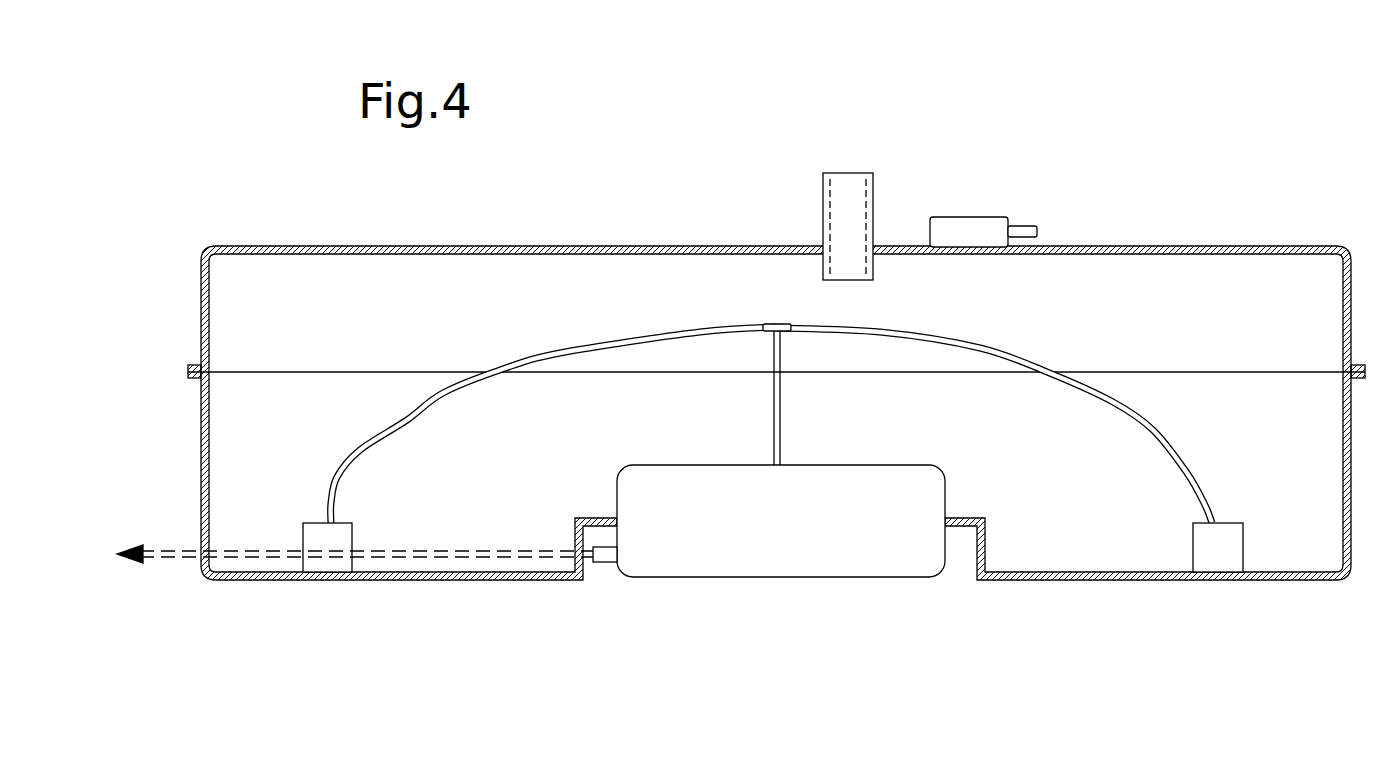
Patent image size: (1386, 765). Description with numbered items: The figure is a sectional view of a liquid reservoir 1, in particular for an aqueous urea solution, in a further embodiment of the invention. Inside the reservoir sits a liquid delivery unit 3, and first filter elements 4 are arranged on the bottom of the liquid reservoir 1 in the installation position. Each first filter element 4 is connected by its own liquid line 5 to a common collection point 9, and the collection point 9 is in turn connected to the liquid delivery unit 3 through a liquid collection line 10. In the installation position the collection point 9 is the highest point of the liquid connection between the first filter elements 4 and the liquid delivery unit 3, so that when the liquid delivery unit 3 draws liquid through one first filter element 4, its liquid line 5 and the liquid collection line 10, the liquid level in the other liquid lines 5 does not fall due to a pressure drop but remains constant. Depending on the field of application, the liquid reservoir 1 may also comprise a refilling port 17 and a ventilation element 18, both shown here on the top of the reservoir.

The liquid reservoir 1 is at (408, 246).
The liquid delivery unit 3 is at (782, 537).
The first filter element 4 is at (330, 550).
The liquid line 5 is at (407, 420).
The collection point 9 is at (777, 322).
The liquid collection line 10 is at (780, 407).
The refilling port 17 is at (853, 203).
The ventilation element 18 is at (972, 228).